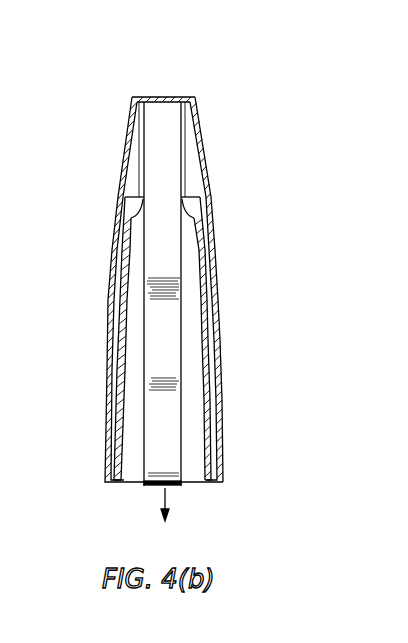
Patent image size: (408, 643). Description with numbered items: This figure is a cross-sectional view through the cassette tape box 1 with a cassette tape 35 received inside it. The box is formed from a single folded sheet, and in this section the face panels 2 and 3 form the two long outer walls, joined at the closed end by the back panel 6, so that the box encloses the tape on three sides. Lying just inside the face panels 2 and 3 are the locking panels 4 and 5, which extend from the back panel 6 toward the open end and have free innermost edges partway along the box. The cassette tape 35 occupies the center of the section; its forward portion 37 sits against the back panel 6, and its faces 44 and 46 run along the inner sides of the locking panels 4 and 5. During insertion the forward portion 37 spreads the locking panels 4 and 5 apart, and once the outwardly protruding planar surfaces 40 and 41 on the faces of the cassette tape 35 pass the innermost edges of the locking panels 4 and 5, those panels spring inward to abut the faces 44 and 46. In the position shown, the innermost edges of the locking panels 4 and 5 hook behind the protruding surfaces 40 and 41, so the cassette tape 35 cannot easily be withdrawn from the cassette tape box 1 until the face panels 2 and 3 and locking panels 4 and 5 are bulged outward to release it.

The cassette tape box 1 is at (164, 266).
The face panel 2 is at (107, 357).
The face panel 3 is at (220, 337).
The locking panel 4 is at (208, 291).
The locking panel 5 is at (122, 298).
The back panel 6 is at (185, 97).
The cassette tape 35 is at (178, 440).
The forward portion 37 is at (160, 97).
The outwardly protruding planar surface 40 is at (137, 210).
The outwardly protruding planar surface 41 is at (199, 222).
The face 44 is at (146, 404).
The face 46 is at (183, 370).